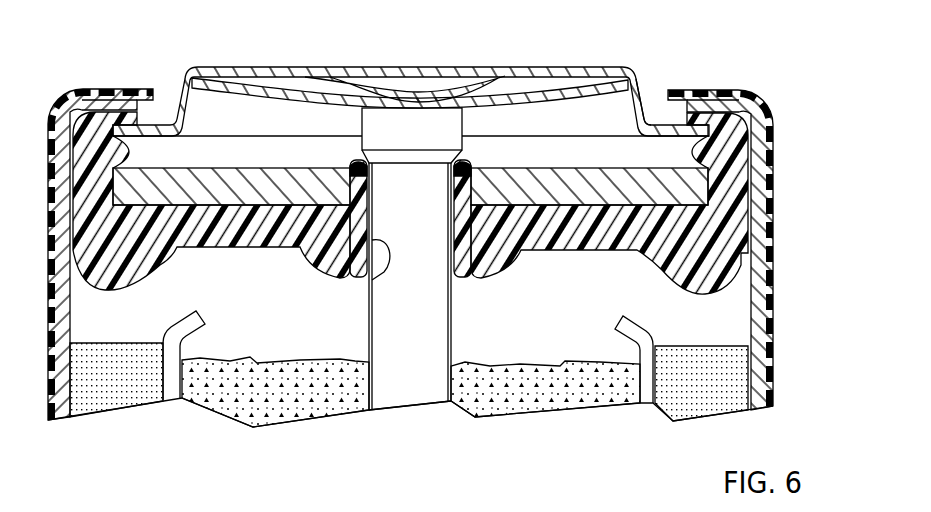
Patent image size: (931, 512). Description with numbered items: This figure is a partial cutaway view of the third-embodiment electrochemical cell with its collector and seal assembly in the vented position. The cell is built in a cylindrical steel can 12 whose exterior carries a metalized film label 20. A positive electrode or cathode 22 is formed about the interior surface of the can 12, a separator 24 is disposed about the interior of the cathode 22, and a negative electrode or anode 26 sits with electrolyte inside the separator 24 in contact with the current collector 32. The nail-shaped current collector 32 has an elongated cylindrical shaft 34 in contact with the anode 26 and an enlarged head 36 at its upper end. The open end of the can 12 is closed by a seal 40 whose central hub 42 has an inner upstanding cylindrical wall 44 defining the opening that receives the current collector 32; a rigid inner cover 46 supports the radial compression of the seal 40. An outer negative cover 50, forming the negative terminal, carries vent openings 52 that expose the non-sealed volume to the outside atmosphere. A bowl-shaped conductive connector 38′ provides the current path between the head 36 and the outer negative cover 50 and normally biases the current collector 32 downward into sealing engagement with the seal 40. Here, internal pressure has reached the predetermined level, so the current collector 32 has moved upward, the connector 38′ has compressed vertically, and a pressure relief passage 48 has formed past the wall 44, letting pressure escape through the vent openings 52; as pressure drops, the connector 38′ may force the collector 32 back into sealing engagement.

The steel can 12 is at (757, 328).
The film label 20 is at (775, 283).
The positive electrode 22 is at (740, 389).
The separator 24 is at (167, 390).
The negative electrode 26 is at (217, 387).
The current collector 32 is at (458, 314).
The elongated cylindrical shaft 34 is at (403, 392).
The enlarged head 36 is at (427, 143).
The conductive connector 38′ is at (303, 96).
The seal 40 is at (744, 185).
The central hub 42 is at (343, 150).
The inner upstanding cylindrical wall 44 is at (376, 270).
The inner cover 46 is at (212, 172).
The pressure relief passage 48 is at (464, 146).
The outer negative cover 50 is at (257, 66).
The vent openings 52 is at (641, 100).